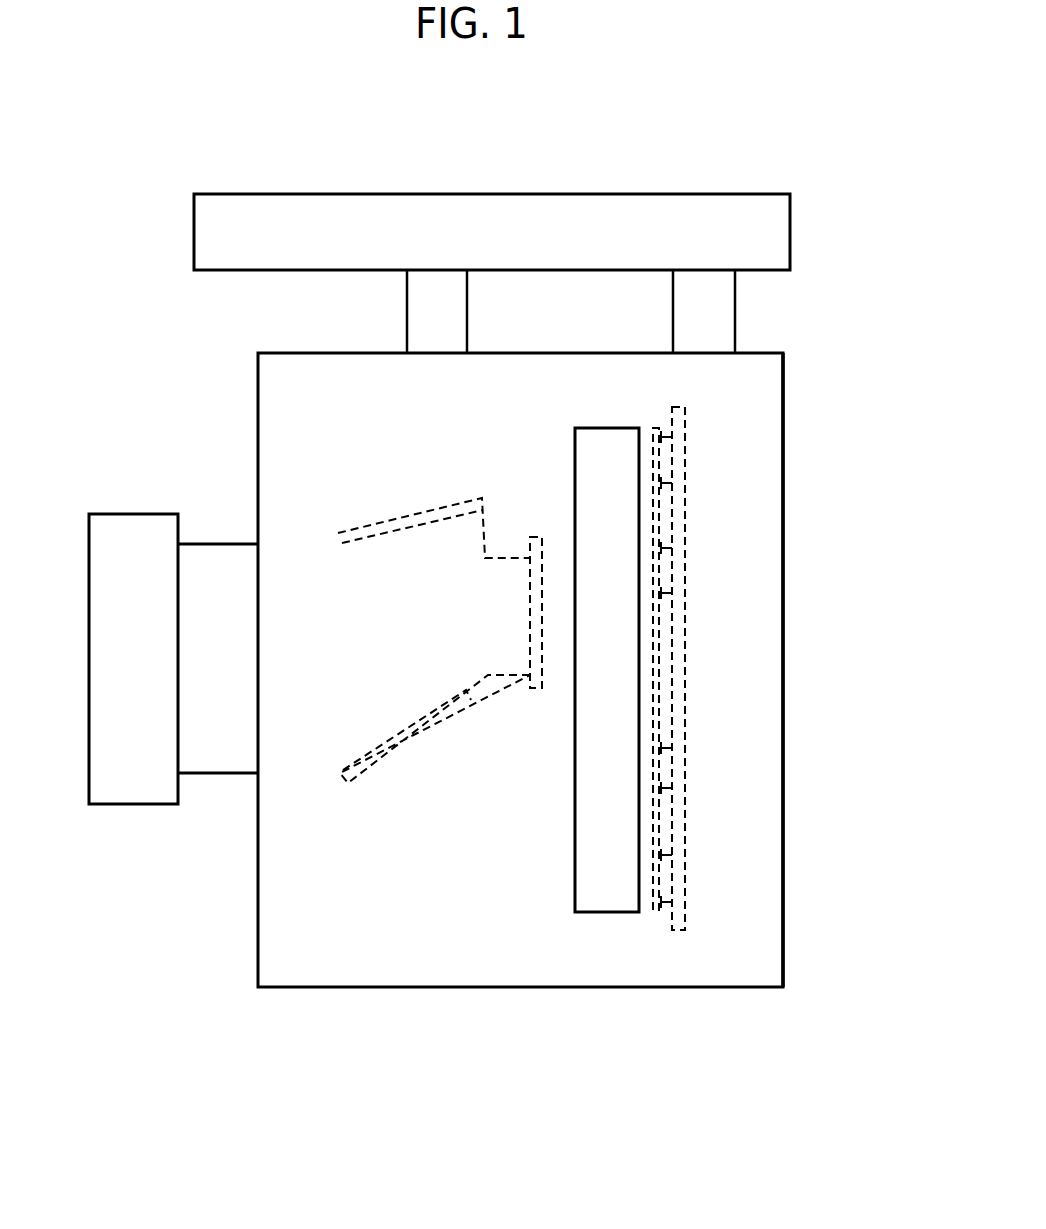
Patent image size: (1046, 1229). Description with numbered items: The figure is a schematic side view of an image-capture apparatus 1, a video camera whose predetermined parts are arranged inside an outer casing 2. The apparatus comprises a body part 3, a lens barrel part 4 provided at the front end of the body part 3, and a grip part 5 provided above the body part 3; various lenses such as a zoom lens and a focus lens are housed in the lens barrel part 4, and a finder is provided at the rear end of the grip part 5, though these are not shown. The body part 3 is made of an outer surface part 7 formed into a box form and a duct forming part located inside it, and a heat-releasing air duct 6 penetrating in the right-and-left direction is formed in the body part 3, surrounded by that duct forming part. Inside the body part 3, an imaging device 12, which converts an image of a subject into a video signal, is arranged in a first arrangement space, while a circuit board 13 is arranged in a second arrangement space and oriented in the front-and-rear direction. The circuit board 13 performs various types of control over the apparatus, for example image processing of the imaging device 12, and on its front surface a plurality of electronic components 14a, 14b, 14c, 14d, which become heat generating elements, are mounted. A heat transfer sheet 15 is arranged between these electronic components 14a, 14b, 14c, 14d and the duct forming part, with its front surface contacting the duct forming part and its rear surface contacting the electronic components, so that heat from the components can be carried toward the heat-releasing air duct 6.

The image-capture apparatus 1 is at (704, 158).
The outer casing 2 is at (776, 421).
The body part 3 is at (776, 554).
The lens barrel part 4 is at (130, 795).
The grip part 5 is at (484, 200).
The heat-releasing air duct 6 is at (577, 888).
The outer surface part 7 is at (776, 691).
The imaging device 12 is at (390, 757).
The circuit board 13 is at (685, 832).
The electronic component 14a is at (673, 503).
The electronic component 14b is at (672, 617).
The electronic component 14c is at (673, 727).
The electronic component 14d is at (663, 897).
The heat transfer sheet 15 is at (650, 907).